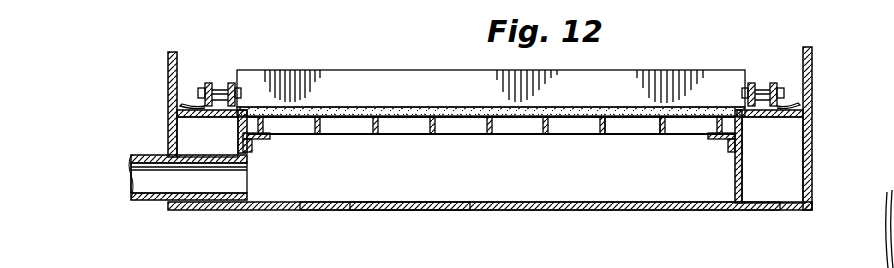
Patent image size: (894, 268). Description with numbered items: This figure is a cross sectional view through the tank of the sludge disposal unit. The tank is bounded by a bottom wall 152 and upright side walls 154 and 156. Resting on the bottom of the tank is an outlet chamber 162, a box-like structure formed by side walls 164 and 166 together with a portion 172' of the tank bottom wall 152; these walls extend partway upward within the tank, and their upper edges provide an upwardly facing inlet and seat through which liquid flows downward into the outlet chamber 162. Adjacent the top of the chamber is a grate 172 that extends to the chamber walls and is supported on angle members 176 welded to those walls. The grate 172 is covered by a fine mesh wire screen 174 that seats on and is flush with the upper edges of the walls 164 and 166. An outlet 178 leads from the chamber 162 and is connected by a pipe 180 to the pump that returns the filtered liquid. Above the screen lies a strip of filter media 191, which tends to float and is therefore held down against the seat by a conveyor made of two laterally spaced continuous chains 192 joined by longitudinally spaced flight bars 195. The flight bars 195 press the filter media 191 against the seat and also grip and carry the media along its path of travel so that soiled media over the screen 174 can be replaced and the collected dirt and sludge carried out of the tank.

The bottom wall 152 is at (763, 211).
The upright side wall 154 is at (168, 80).
The upright side wall 156 is at (813, 83).
The outlet chamber 162 is at (637, 195).
The side wall 164 is at (240, 143).
The side wall 166 is at (769, 156).
The grate 172 is at (491, 141).
The portion of tank bottom wall 172' is at (410, 222).
The fine mesh wire screen 174 is at (627, 120).
The angle member 176 is at (255, 150).
The outlet 178 is at (240, 182).
The pipe 180 is at (152, 185).
The filter media 191 is at (422, 108).
The continuous chain 192 is at (206, 83).
The flight bar 195 is at (330, 78).